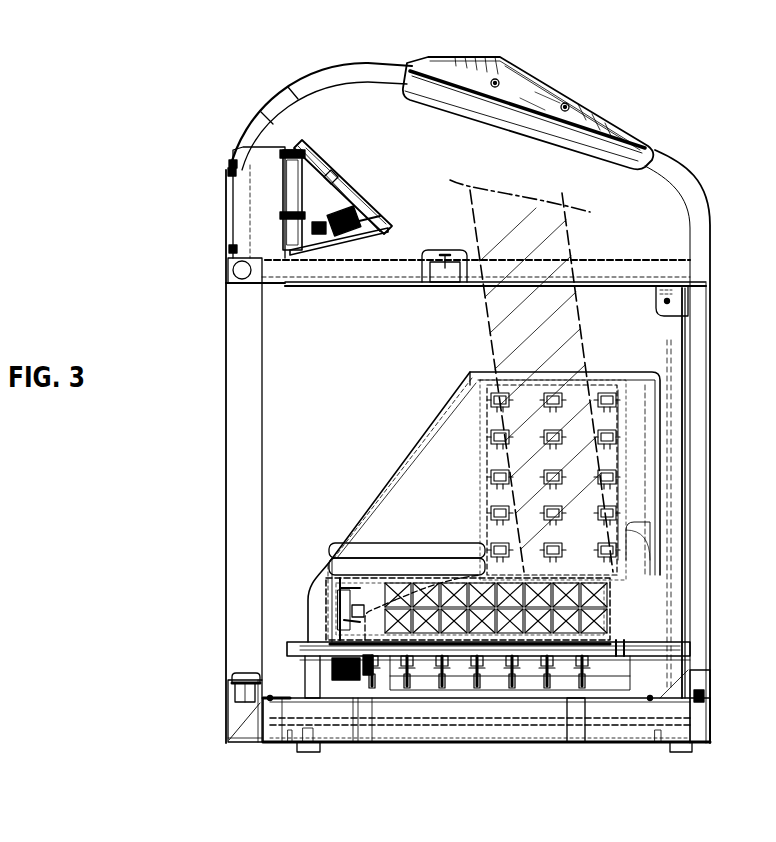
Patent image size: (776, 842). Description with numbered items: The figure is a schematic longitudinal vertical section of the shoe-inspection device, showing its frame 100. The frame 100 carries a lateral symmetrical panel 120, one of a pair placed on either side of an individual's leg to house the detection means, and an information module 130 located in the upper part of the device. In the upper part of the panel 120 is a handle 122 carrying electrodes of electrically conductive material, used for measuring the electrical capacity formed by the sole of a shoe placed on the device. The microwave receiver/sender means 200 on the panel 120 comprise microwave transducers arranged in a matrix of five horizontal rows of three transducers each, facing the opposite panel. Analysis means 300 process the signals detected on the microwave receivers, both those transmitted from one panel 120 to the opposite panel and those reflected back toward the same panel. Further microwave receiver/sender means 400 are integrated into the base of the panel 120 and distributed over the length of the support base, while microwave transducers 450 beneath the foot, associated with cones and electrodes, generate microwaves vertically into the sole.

The frame 100 is at (642, 730).
The lateral symmetrical panel 120 is at (240, 484).
The handle 122 is at (549, 70).
The information module 130 is at (323, 197).
The microwave receiver/sender means 200 is at (611, 499).
The analysis means 300 is at (263, 212).
The microwave receiver/sender means 400 is at (573, 607).
The microwave transducer 450 is at (497, 693).